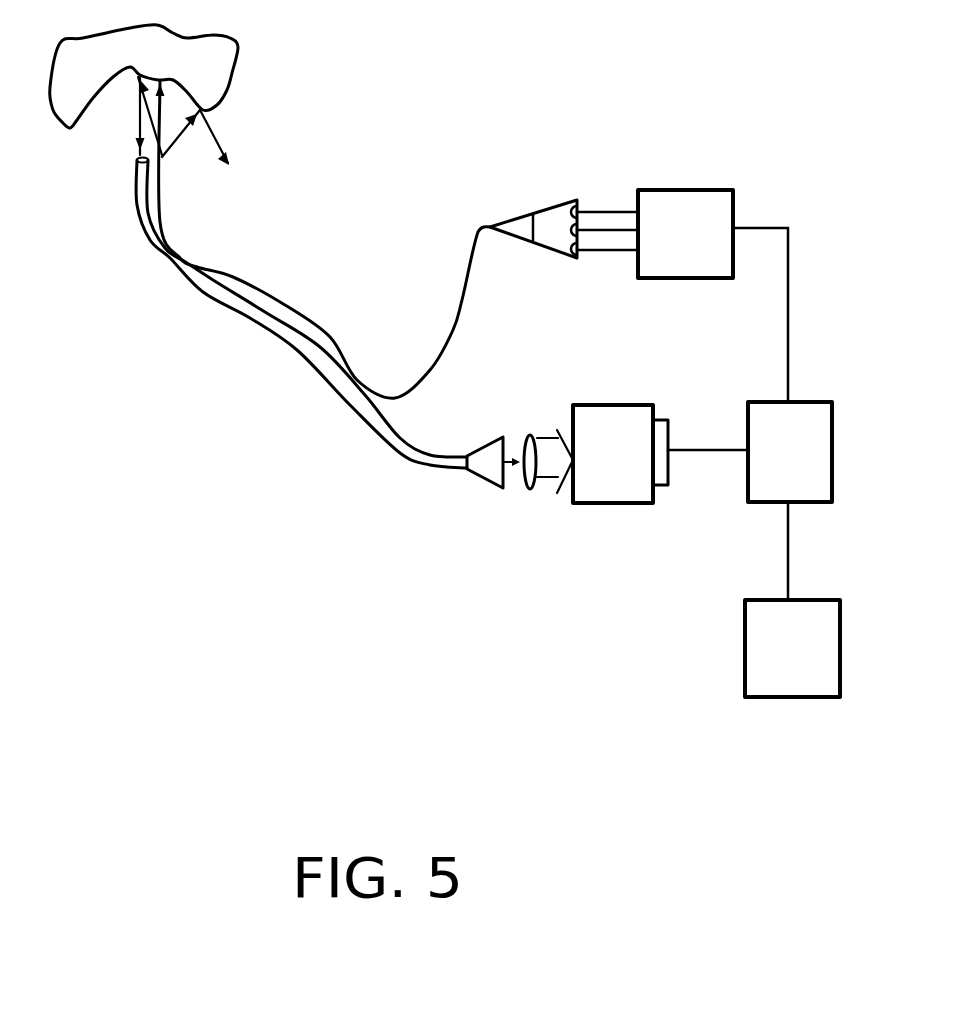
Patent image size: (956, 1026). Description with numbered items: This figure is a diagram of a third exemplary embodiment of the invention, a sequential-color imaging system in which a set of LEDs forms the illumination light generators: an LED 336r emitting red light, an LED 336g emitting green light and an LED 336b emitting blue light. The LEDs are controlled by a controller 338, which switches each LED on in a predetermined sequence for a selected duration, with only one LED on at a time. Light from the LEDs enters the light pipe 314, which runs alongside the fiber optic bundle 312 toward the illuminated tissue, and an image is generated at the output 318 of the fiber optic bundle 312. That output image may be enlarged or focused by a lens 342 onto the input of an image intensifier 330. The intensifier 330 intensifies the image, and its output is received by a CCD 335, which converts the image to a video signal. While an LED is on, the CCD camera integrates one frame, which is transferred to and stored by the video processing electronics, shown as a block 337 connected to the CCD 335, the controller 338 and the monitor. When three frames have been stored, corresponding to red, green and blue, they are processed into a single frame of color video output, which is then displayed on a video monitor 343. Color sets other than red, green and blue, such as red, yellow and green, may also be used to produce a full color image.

The fiber optic bundle 312 is at (320, 372).
The light pipe 314 is at (332, 352).
The output of the fiber optic bundle 318 is at (493, 477).
The lens 342 is at (530, 483).
The image intensifier 330 is at (592, 432).
The CCD 335 is at (662, 473).
The processor 337 is at (775, 432).
The controller 338 is at (675, 212).
The video monitor 343 is at (775, 647).
The LED emitting green light 336g is at (557, 203).
The LED emitting red light 336r is at (553, 228).
The LED emitting blue light 336b is at (560, 248).